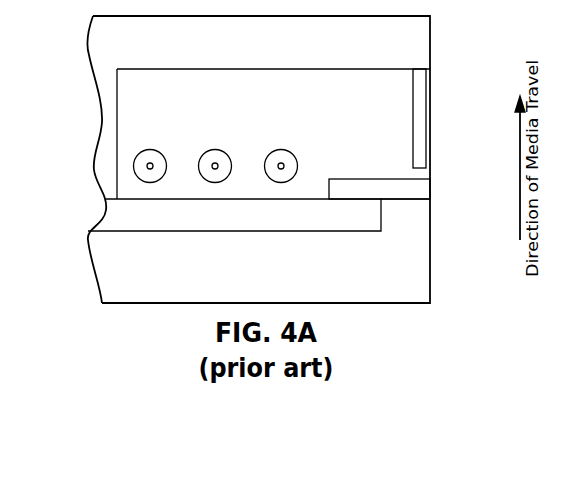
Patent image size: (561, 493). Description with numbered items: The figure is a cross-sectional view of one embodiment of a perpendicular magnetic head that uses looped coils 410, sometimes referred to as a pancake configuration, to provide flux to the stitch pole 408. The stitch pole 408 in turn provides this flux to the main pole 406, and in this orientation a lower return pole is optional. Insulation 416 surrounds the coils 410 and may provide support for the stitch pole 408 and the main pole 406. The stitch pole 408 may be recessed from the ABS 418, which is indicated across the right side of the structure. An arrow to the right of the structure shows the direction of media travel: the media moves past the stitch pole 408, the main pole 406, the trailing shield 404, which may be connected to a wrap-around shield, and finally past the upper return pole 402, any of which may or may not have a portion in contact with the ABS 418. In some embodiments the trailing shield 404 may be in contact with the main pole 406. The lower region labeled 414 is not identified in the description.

The upper return pole 402 is at (343, 50).
The trailing shield 404 is at (430, 100).
The main pole 406 is at (430, 185).
The stitch pole 408 is at (290, 224).
The looped coils 410 is at (153, 149).
The lower housing region 414 is at (290, 274).
The insulation 416 is at (381, 141).
The ABS 418 is at (431, 34).